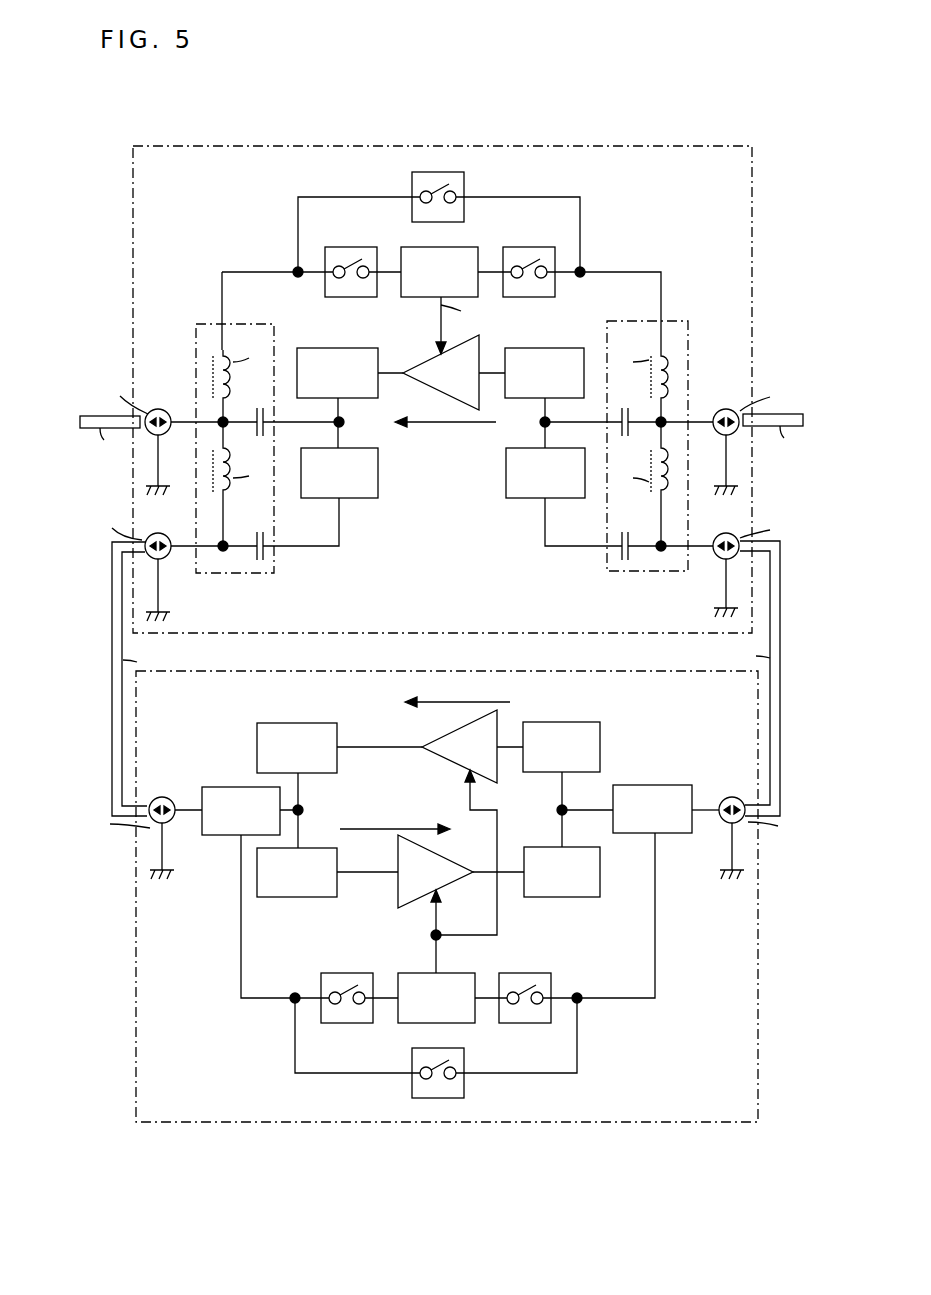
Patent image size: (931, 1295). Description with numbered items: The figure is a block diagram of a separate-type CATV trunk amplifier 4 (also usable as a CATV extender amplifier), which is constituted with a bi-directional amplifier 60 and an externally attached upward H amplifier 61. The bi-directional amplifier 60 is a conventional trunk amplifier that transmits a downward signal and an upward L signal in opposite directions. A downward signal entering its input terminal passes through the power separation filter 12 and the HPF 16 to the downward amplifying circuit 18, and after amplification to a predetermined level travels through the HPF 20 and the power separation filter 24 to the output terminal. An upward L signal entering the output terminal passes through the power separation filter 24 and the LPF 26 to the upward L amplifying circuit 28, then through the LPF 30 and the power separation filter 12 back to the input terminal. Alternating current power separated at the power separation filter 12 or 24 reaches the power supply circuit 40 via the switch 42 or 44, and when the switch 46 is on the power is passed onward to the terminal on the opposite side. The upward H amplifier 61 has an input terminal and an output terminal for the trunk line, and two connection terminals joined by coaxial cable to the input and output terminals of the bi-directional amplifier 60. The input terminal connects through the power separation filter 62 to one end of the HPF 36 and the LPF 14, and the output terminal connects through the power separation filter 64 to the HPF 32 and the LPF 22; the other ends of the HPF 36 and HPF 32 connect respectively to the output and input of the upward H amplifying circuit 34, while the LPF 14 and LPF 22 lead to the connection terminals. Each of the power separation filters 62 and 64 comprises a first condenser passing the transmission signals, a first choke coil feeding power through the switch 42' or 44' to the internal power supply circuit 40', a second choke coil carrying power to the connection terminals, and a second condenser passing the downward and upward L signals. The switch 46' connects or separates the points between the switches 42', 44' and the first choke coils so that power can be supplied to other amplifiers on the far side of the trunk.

The CATV trunk amplifier 4 is at (740, 94).
The upward H amplifier 61 is at (485, 146).
The bi-directional amplifier 60 is at (366, 671).
The power separation filter 62 is at (198, 324).
The power separation filter 64 is at (688, 325).
The HPF 36 is at (317, 348).
The upward H amplifying circuit 34 is at (414, 358).
The HPF 32 is at (566, 348).
The LPF 14 is at (324, 447).
The LPF 22 is at (555, 444).
The switch 46' is at (457, 184).
The switch 42' is at (343, 260).
The power supply circuit 40' is at (439, 260).
The switch 44' is at (533, 260).
The power separation filter 12 is at (218, 778).
The LPF 30 is at (285, 722).
The HPF 16 is at (280, 897).
The upward L amplifying circuit 28 is at (444, 732).
The downward amplifying circuit 18 is at (446, 858).
The LPF 26 is at (585, 722).
The HPF 20 is at (588, 847).
The power separation filter 24 is at (678, 785).
The switch 42 is at (361, 984).
The power supply circuit 40 is at (444, 984).
The switch 44 is at (533, 984).
The switch 46 is at (451, 1058).